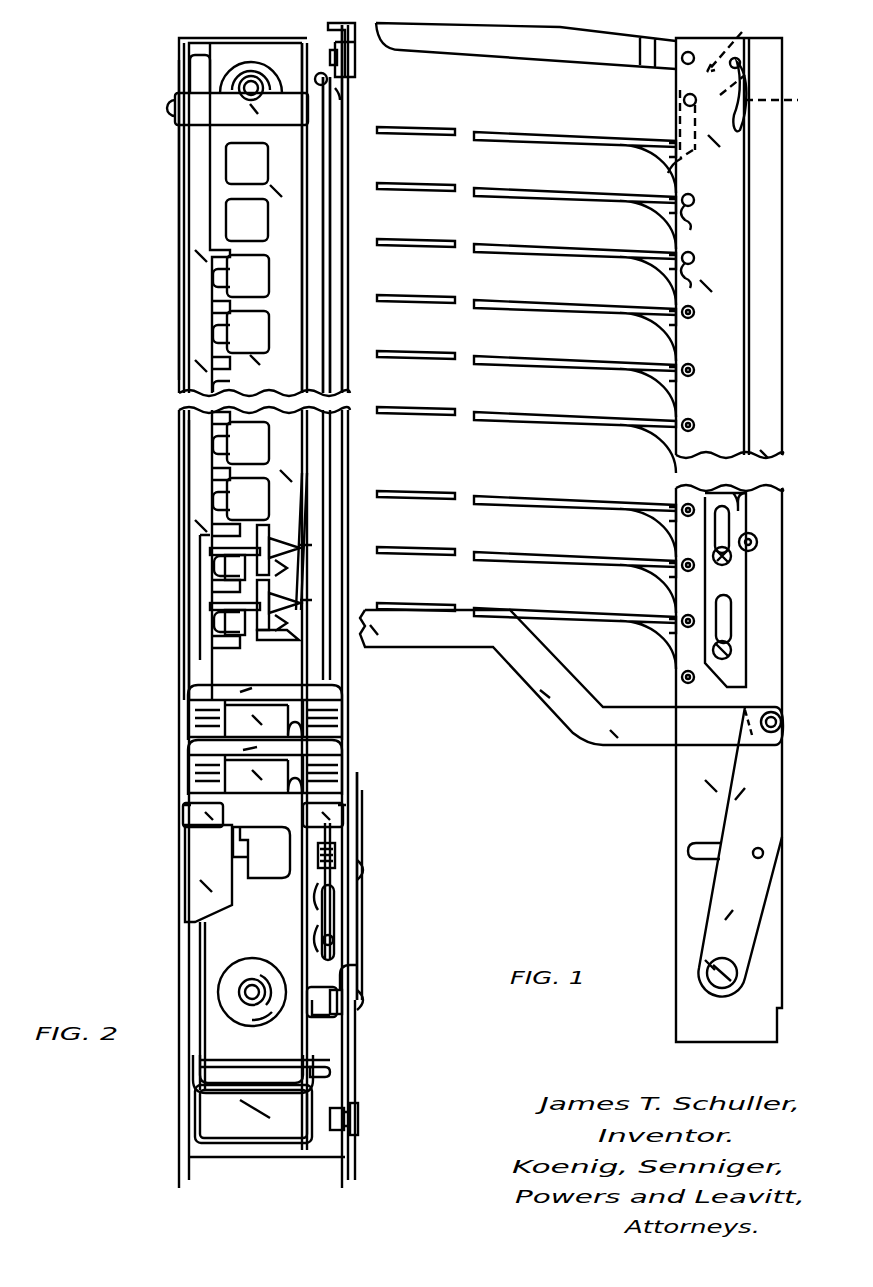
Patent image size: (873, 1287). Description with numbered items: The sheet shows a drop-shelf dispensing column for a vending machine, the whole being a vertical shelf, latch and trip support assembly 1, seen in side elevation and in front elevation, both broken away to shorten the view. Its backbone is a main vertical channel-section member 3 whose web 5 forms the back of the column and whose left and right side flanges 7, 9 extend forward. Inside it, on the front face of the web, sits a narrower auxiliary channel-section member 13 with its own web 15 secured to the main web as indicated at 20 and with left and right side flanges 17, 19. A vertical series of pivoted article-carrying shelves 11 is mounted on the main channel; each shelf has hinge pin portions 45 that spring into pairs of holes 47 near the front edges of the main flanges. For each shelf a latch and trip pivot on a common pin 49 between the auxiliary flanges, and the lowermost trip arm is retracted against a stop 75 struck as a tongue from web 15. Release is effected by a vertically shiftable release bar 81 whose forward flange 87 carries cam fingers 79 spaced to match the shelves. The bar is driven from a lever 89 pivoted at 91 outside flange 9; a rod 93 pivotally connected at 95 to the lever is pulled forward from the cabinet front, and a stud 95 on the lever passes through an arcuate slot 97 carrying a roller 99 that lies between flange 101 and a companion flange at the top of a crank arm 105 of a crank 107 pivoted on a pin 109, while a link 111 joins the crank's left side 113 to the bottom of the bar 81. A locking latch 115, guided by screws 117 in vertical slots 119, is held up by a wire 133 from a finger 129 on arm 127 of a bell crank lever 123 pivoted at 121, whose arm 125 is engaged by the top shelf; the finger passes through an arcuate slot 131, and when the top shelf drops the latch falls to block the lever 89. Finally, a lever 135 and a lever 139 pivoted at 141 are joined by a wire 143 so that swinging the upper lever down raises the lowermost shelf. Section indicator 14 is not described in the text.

In FIG. 2, the vertical shelf, latch and trip support assembly 1 is at (170, 456).
In FIG. 1, the vertical shelf, latch and trip support assembly 1 is at (794, 435).
In FIG. 2, the main vertical channel-section member 3 is at (293, 700).
In FIG. 1, the main vertical channel-section member 3 is at (792, 391).
In FIG. 1, the web 5 is at (783, 349).
In FIG. 2, the left side flange 7 is at (179, 337).
In FIG. 2, the right side flange 9 is at (348, 334).
In FIG. 1, the right side flange 9 is at (760, 310).
In FIG. 2, the article-carrying shelves 11 is at (200, 686).
In FIG. 1, the article-carrying shelves 11 is at (526, 130).
In FIG. 2, the auxiliary channel-section member 13 is at (316, 220).
In FIG. 2, the section line / rear wall 14 is at (340, 793).
In FIG. 2, the web 15 is at (288, 37).
In FIG. 2, the left side flange 17 is at (195, 42).
In FIG. 2, the right side flange 19 is at (312, 268).
In FIG. 2, the securement of web 15 to web 5 20 is at (254, 86).
In FIG. 2, the hinge pin portions 45 is at (182, 768).
In FIG. 1, the hinge pin portions 45 is at (691, 200).
In FIG. 1, the holes 47 is at (700, 249).
In FIG. 2, the pin 49 is at (312, 545).
In FIG. 2, the stop 75 is at (266, 840).
In FIG. 2, the cam fingers 79 is at (226, 276).
In FIG. 2, the release bar 81 is at (190, 512).
In FIG. 2, the flange 87 is at (198, 568).
In FIG. 2, the lever 89 is at (356, 1041).
In FIG. 1, the lever 89 is at (757, 890).
In FIG. 2, the pivot 91 is at (358, 1121).
In FIG. 1, the pivot 91 is at (707, 978).
In FIG. 2, the rod 93 is at (360, 844).
In FIG. 1, the rod 93 is at (555, 709).
In FIG. 2, the pivotal connection / stud 95 is at (375, 877).
In FIG. 1, the pivotal connection / stud 95 is at (782, 721).
In FIG. 1, the arcuate slot 97 is at (688, 850).
In FIG. 2, the roller 99 is at (356, 966).
In FIG. 2, the flange 101 is at (338, 1018).
In FIG. 2, the crank arm 105 is at (312, 1056).
In FIG. 2, the crank 107 is at (250, 1145).
In FIG. 2, the pin 109 is at (328, 1074).
In FIG. 2, the link 111 is at (200, 979).
In FIG. 2, the left side of crank 113 is at (195, 1103).
In FIG. 1, the latch 115 is at (730, 670).
In FIG. 1, the screws 117 is at (735, 558).
In FIG. 1, the vertical slots 119 is at (730, 520).
In FIG. 1, the pivot 121 is at (684, 100).
In FIG. 1, the bell crank lever 123 is at (736, 41).
In FIG. 1, the arm 125 is at (677, 165).
In FIG. 1, the arm 127 is at (776, 92).
In FIG. 1, the finger 129 is at (743, 63).
In FIG. 1, the arcuate slot 131 is at (733, 128).
In FIG. 1, the wire 133 is at (748, 243).
In FIG. 2, the lever 135 is at (340, 913).
In FIG. 2, the lever 139 is at (343, 90).
In FIG. 1, the lever 139 is at (538, 58).
In FIG. 1, the pivot 141 is at (688, 52).
In FIG. 2, the wire 143 is at (330, 153).